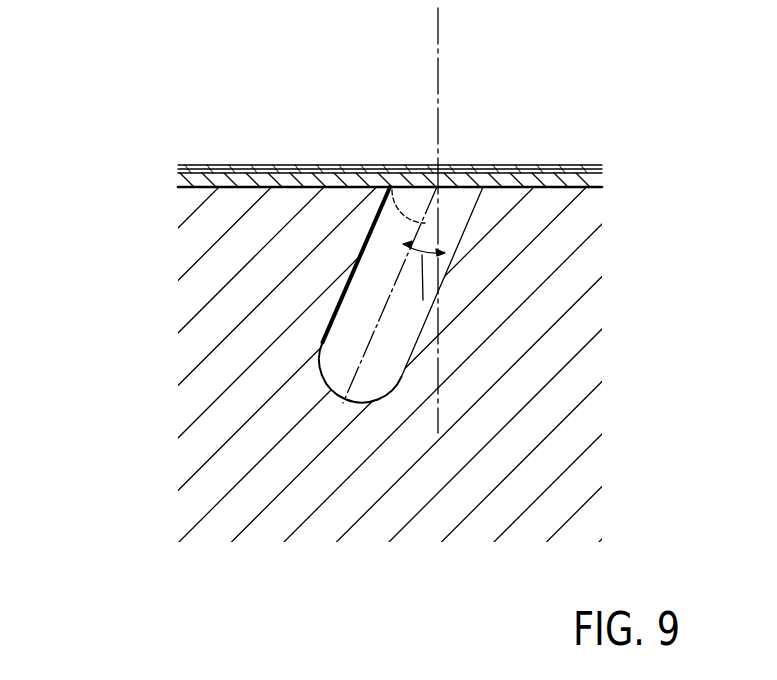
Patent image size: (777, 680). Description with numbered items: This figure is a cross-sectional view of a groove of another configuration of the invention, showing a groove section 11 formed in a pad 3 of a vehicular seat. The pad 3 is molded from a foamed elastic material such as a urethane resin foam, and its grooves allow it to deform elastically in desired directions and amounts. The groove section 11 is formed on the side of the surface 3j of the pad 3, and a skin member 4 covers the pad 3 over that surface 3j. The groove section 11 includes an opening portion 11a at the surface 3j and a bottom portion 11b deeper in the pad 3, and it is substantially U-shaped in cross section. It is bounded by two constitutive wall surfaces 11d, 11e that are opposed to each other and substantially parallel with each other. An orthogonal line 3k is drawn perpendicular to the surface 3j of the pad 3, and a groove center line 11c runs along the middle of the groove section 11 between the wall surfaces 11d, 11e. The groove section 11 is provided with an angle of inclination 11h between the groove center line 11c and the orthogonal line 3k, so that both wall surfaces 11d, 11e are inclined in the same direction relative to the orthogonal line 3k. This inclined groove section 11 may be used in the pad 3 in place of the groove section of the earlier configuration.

The pad 3 is at (237, 403).
The surface of the pad 3j is at (528, 187).
The orthogonal line 3k is at (438, 86).
The skin member 4 is at (213, 165).
The groove section 11 is at (386, 351).
The opening portion 11a is at (458, 165).
The bottom portion 11b is at (358, 404).
The groove center line 11c is at (392, 165).
The constitutive wall surface 11d is at (335, 322).
The constitutive wall surface 11e is at (453, 255).
The angle of inclination 11h is at (422, 255).